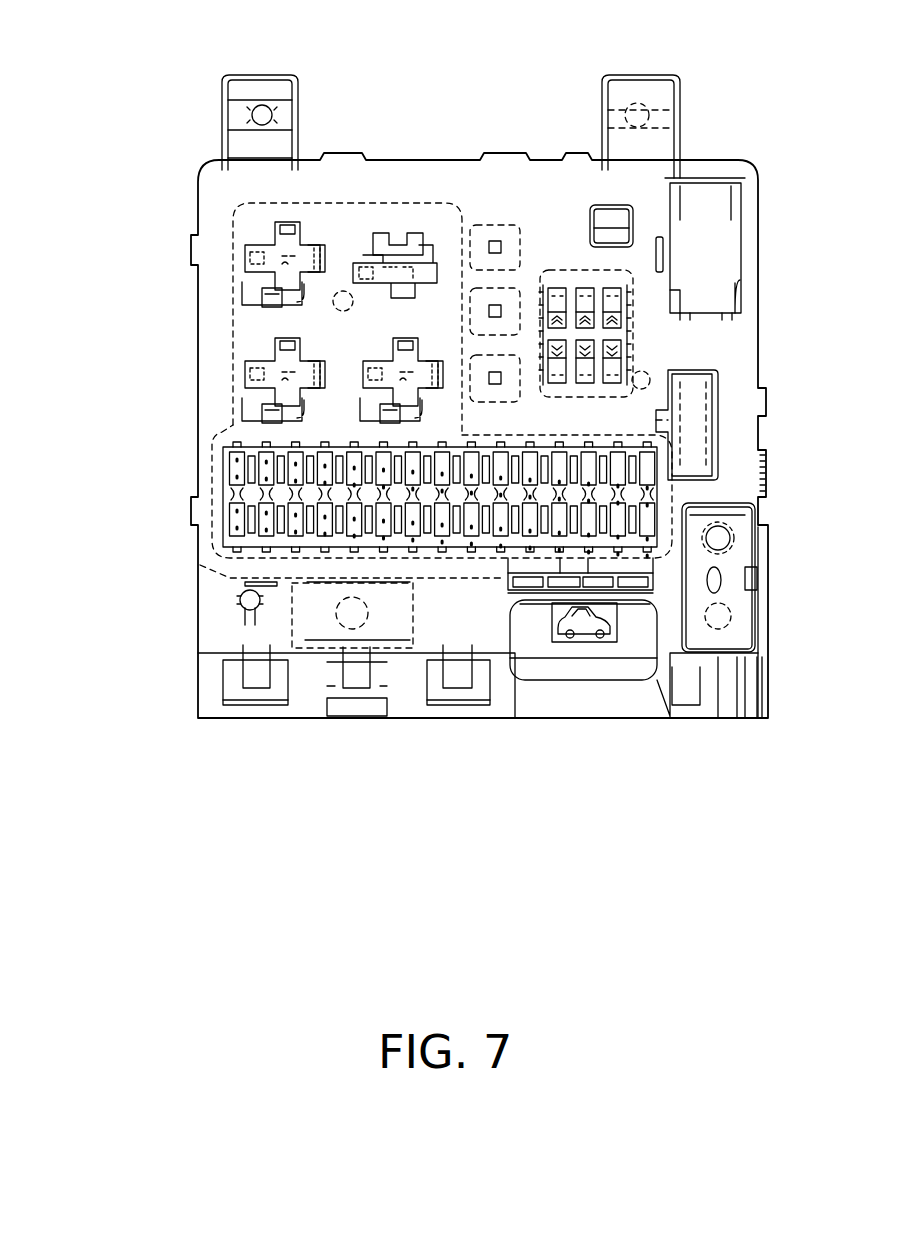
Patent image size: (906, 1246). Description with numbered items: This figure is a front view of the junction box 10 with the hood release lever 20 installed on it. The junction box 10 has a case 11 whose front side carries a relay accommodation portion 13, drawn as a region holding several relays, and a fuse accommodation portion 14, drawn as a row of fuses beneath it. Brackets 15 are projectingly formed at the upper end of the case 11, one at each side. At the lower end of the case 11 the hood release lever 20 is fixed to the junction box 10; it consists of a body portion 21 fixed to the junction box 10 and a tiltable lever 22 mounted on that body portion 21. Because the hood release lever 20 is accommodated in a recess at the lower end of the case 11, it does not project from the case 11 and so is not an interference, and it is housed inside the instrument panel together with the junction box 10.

The junction box 10 is at (175, 219).
The case 11 is at (730, 342).
The relay accommodation portion 13 is at (238, 357).
The fuse accommodation portion 14 is at (235, 463).
The brackets 15 is at (283, 108).
The hood release lever 20 is at (564, 705).
The body portion 21 is at (560, 642).
The tiltable lever 22 is at (535, 648).